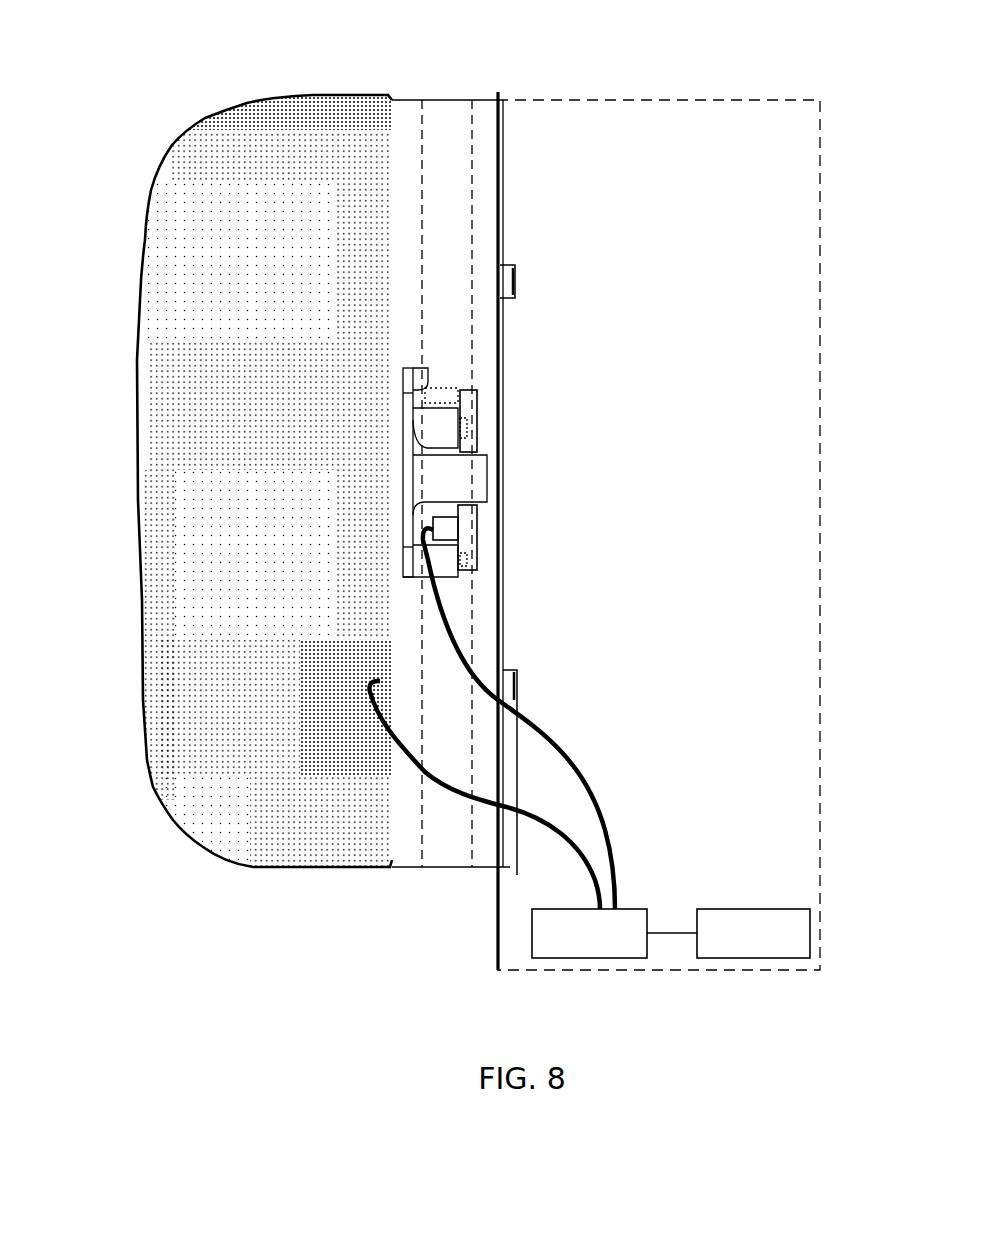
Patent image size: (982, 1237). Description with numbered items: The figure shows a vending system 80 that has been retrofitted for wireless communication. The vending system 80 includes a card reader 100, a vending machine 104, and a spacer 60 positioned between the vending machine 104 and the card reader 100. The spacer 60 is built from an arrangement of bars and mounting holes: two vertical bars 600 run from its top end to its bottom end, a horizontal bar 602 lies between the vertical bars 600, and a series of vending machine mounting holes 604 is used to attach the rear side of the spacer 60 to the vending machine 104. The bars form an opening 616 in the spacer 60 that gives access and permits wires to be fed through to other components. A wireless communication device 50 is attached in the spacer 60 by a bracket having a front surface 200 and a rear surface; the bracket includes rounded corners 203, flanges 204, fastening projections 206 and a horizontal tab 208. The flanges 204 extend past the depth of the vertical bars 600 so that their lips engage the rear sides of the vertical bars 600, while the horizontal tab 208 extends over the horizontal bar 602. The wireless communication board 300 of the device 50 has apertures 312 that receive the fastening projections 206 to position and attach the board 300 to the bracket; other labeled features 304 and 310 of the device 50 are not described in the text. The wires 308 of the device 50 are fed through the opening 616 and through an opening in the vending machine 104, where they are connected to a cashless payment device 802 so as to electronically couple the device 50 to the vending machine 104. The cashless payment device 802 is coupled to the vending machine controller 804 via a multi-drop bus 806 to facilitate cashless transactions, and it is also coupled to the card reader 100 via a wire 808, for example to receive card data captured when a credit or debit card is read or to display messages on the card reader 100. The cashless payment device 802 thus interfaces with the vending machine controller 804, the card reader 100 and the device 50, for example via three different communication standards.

The vending system 80 is at (224, 437).
The card reader 100 is at (168, 197).
The spacer 60 is at (402, 107).
The vertical bars 600 is at (450, 150).
The horizontal bar 602 is at (445, 388).
The vending machine mounting holes 604 is at (520, 280).
The vending machine 104 is at (787, 153).
The wireless communication device 50 is at (482, 455).
The front surface 200 is at (372, 471).
The rounded corners 203 is at (407, 560).
The flanges 204 is at (452, 477).
The fastening projections 206 is at (447, 427).
The horizontal tab 208 is at (423, 377).
The wireless communication board 300 is at (477, 400).
The sensor 304 is at (450, 528).
The wires 308 is at (427, 535).
The wire 310 is at (485, 697).
The apertures 312 is at (462, 427).
The opening 616 is at (510, 780).
The cashless payment device 802 is at (588, 960).
The vending machine controller 804 is at (753, 960).
The multi-drop bus 806 is at (665, 933).
The wire 808 is at (382, 722).